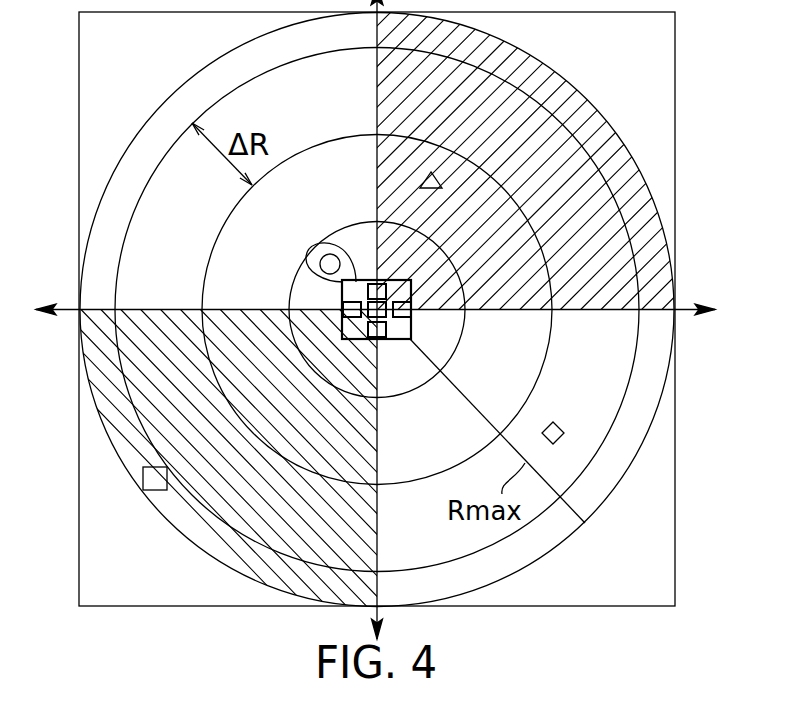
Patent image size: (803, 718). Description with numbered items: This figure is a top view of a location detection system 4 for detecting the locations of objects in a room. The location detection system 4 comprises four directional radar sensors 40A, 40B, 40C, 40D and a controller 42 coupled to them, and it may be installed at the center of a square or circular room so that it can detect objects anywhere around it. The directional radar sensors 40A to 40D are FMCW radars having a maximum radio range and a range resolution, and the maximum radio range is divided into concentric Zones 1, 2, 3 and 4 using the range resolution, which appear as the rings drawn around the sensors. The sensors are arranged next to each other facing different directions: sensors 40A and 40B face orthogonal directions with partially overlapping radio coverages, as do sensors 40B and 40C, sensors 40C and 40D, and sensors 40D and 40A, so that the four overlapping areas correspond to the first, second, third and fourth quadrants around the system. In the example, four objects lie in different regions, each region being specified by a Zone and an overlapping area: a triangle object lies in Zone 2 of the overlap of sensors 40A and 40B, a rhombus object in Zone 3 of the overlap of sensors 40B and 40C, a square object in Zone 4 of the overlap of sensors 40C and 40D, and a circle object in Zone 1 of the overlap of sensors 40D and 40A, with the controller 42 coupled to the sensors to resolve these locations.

The Zone 1 is at (377, 310).
The Zone 2 is at (377, 310).
The Zone 3 is at (377, 310).
The location detection system 4 is at (413, 333).
The directional radar sensor 40A is at (356, 281).
The directional radar sensor 40B is at (412, 313).
The directional radar sensor 40C is at (385, 339).
The directional radar sensor 40D is at (342, 290).
The controller 42 is at (312, 265).